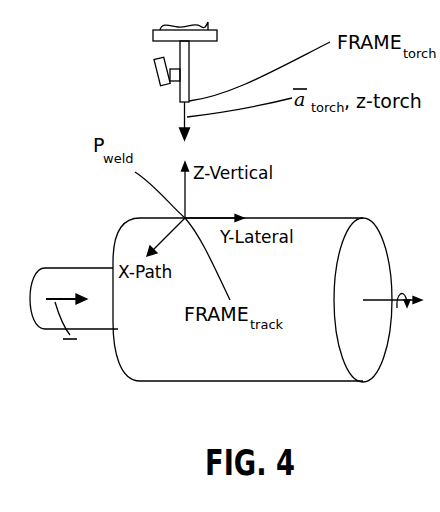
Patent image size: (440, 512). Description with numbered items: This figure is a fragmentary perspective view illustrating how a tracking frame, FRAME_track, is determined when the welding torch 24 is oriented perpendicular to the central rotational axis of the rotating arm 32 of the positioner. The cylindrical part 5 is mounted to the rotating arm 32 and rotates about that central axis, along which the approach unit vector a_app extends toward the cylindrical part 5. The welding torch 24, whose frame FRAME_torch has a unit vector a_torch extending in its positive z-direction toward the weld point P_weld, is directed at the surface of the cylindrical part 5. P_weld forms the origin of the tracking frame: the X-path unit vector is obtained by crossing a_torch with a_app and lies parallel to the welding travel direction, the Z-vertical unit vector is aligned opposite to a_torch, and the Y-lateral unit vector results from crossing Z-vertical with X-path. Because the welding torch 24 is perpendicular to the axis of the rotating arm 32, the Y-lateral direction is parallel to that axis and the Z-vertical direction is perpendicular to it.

The welding torch 24 is at (189, 90).
The cylindrical part 5 is at (208, 345).
The rotating arm 32 is at (78, 283).